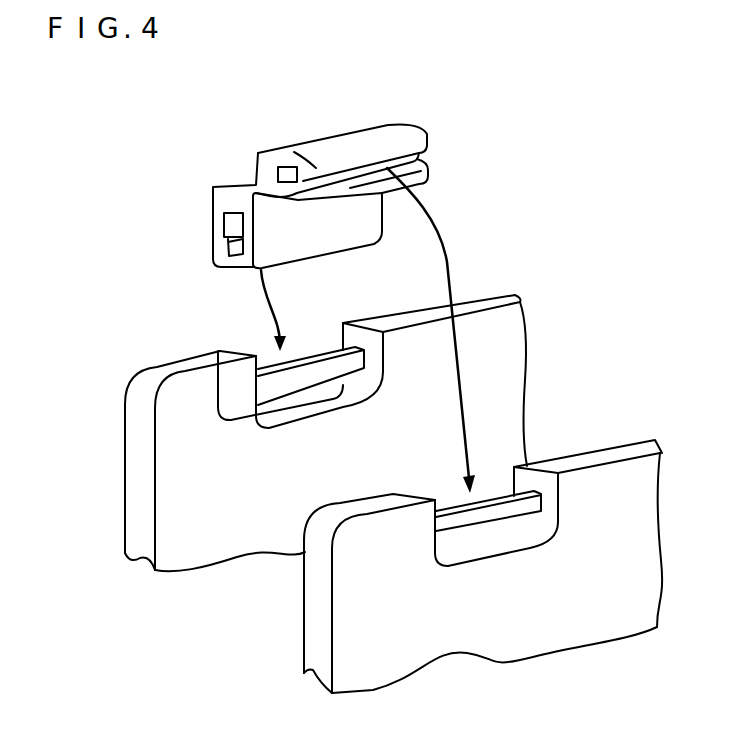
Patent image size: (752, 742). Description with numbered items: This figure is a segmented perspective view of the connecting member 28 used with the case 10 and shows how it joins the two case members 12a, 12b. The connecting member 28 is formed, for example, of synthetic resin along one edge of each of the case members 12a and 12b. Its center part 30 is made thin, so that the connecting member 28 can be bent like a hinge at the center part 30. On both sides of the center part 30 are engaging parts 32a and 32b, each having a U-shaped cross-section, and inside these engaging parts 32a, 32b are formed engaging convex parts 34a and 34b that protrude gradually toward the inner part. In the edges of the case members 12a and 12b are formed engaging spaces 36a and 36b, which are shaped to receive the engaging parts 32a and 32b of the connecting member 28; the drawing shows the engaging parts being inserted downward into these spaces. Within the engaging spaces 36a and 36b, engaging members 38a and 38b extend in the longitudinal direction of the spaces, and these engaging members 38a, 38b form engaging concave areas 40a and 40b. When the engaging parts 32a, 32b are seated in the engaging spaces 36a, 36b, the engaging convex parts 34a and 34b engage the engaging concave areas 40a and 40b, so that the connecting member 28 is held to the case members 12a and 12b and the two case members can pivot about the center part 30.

The terminal block 10 is at (531, 300).
The case member 12a is at (320, 662).
The case member 12b is at (140, 512).
The connecting member 28 is at (351, 125).
The center part 30 is at (244, 181).
The engaging part 32a is at (398, 138).
The engaging part 32b is at (294, 242).
The engaging convex part 34a is at (300, 170).
The engaging convex part 34b is at (225, 250).
The engaging space 36a is at (482, 479).
The engaging space 36b is at (264, 353).
The engaging member 38a is at (512, 510).
The engaging member 38b is at (311, 367).
The engaging concave area 40a is at (490, 532).
The engaging concave area 40b is at (313, 389).